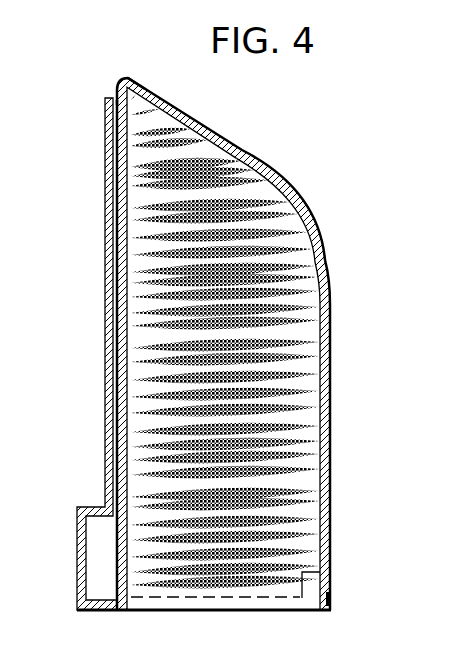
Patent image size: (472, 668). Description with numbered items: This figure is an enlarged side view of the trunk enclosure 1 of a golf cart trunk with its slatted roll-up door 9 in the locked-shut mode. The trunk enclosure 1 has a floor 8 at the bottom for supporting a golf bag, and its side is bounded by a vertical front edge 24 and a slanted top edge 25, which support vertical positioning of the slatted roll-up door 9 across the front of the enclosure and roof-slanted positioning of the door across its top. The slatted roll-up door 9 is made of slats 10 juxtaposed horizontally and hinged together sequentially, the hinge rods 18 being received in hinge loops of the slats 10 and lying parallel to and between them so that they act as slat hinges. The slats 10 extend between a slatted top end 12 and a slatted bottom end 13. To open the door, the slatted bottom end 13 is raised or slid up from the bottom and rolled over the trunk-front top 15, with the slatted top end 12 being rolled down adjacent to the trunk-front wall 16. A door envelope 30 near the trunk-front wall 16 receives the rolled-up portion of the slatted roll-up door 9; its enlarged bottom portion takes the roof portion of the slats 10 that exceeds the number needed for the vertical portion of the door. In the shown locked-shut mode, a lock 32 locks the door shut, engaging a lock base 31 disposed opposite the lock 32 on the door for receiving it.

The trunk enclosure 1 is at (92, 348).
The floor 8 is at (220, 597).
The slatted roll-up door 9 is at (346, 345).
The slats 10 is at (330, 431).
The slatted top end 12 is at (117, 138).
The slatted bottom end 13 is at (333, 611).
The trunk-front top 15 is at (125, 82).
The trunk-front wall 16 is at (120, 269).
The hinge rods 18 is at (257, 150).
The vertical front edges 24 is at (323, 389).
The slanted top edges 25 is at (298, 186).
The door envelope 30 is at (107, 215).
The lock base 31 is at (308, 572).
The lock 32 is at (332, 596).